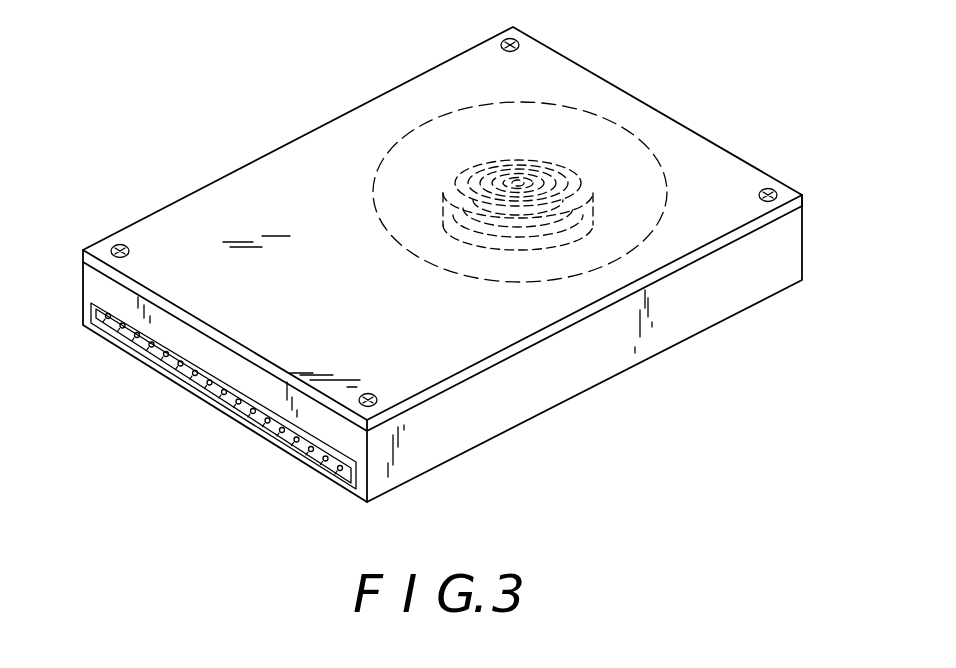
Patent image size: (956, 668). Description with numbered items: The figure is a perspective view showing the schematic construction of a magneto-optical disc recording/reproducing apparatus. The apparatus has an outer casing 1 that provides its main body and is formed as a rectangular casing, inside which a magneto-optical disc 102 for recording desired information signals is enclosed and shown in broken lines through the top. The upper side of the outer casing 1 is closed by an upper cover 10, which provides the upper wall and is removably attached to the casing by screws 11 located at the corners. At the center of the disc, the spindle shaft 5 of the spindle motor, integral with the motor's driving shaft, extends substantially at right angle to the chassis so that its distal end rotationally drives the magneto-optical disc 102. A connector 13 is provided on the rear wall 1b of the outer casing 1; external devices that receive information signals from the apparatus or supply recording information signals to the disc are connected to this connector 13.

The outer casing 1 is at (445, 274).
The rear wall 1b is at (348, 440).
The upper cover 10 is at (680, 148).
The screws 11 is at (505, 40).
The magneto-optical disc 102 is at (590, 127).
The spindle shaft 5 is at (516, 183).
The connector 13 is at (233, 405).